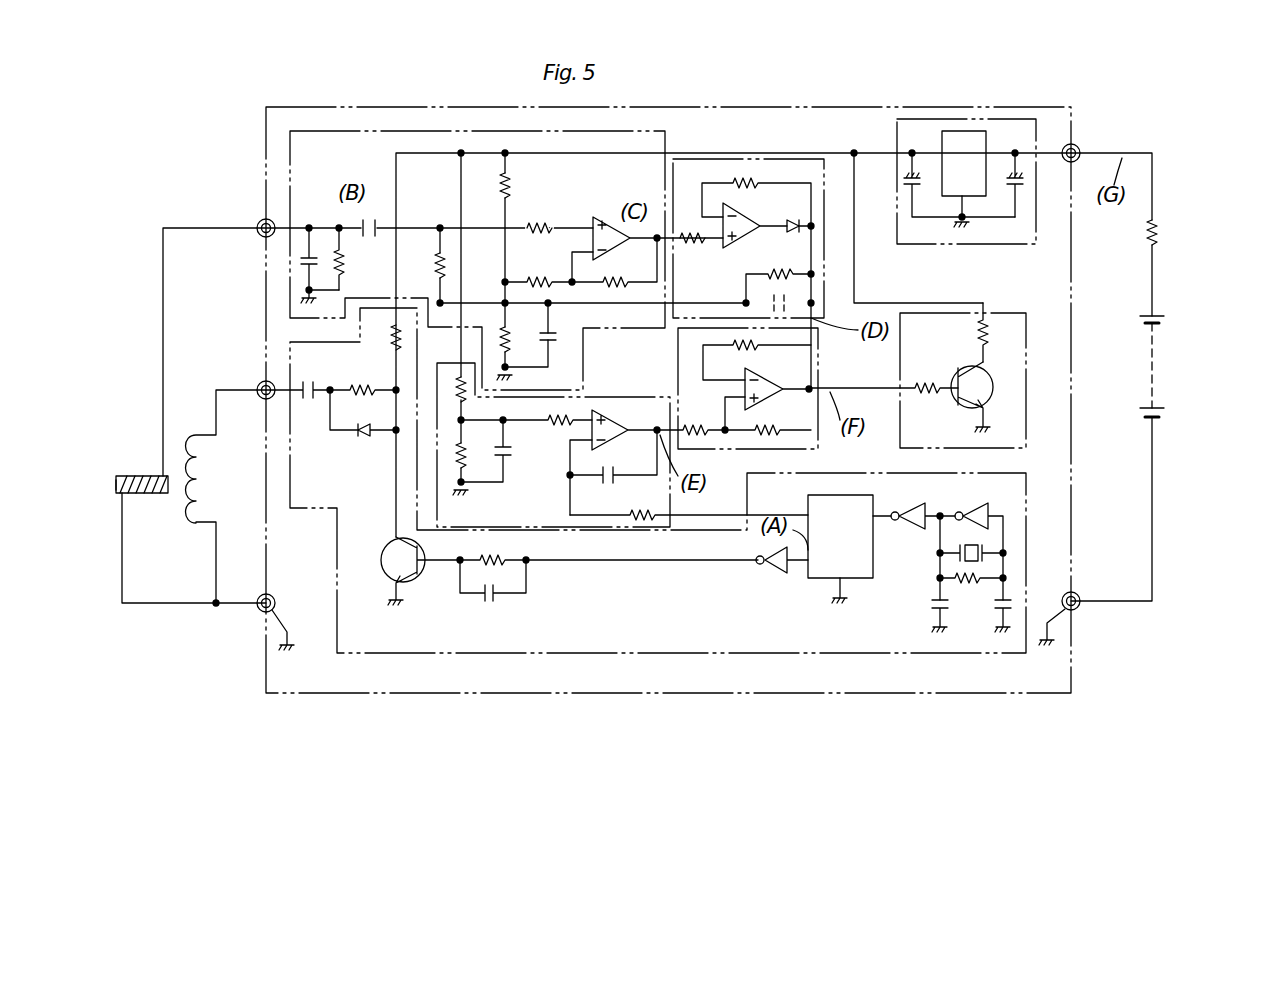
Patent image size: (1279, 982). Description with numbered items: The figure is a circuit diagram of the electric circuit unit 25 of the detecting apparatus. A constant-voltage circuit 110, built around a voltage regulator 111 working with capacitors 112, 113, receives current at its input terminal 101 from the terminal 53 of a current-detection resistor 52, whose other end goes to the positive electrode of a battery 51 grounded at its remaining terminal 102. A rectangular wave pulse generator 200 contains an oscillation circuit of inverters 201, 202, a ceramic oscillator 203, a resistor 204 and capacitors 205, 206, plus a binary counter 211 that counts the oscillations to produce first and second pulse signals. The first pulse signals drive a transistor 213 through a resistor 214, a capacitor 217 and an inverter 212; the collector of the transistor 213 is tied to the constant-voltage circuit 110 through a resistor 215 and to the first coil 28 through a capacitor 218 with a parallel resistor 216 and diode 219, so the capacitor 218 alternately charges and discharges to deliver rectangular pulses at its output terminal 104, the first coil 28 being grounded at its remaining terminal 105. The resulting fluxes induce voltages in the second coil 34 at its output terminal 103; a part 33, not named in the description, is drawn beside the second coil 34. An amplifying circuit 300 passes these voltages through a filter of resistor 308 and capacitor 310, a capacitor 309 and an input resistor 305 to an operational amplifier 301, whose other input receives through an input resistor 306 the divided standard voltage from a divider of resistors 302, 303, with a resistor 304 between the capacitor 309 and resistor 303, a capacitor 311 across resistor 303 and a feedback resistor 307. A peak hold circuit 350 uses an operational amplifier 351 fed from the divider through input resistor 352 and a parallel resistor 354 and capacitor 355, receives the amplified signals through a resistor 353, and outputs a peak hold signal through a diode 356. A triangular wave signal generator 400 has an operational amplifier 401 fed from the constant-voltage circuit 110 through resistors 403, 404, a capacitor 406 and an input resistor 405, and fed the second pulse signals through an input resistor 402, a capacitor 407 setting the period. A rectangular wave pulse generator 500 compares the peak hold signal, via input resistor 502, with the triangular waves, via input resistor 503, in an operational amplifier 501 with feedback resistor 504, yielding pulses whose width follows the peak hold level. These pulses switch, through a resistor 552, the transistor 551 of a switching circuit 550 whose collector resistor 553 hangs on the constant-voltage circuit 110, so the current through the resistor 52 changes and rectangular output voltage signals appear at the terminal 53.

The electric circuit unit 25 is at (320, 99).
The first coil 28 is at (195, 522).
The magnetic core 33 is at (116, 486).
The second coil 34 is at (148, 476).
The battery 51 is at (1146, 362).
The current-detection resistor 52 is at (1145, 236).
The terminal 53 is at (1152, 180).
The input terminal 101 is at (1078, 147).
The remaining terminal 102 is at (1074, 610).
The output terminal 103 is at (260, 220).
The output terminal 104 is at (260, 382).
The remaining terminal 105 is at (259, 612).
The constant-voltage circuit 110 is at (1010, 248).
The voltage regulator 111 is at (978, 138).
The capacitor 112 is at (1006, 188).
The capacitor 113 is at (922, 188).
The rectangular wave pulse generator 200 is at (1008, 472).
The inverter 201 is at (976, 509).
The inverter 202 is at (912, 509).
The ceramic oscillator 203 is at (965, 540).
The resistor 204 is at (966, 590).
The capacitor 205 is at (928, 604).
The capacitor 206 is at (1012, 600).
The binary counter 211 is at (808, 578).
The inverter 212 is at (770, 566).
The transistor 213 is at (410, 584).
The resistor 214 is at (505, 556).
The resistor 215 is at (390, 330).
The resistor 216 is at (352, 386).
The capacitor 217 is at (488, 600).
The capacitor 218 is at (306, 398).
The diode 219 is at (362, 440).
The amplifying circuit 300 is at (541, 124).
The operational amplifier 301 is at (606, 216).
The resistor 302 is at (512, 188).
The resistor 303 is at (498, 335).
The resistor 304 is at (448, 260).
The input resistor 305 is at (538, 222).
The input resistor 306 is at (537, 278).
The resistor 307 is at (613, 278).
The resistor 308 is at (347, 262).
The capacitor 309 is at (372, 217).
The capacitor 310 is at (322, 258).
The capacitor 311 is at (556, 338).
The peak hold circuit 350 is at (724, 154).
The operational amplifier 351 is at (738, 248).
The input resistor 352 is at (752, 182).
The resistor 353 is at (692, 250).
The resistor 354 is at (785, 270).
The capacitor 355 is at (786, 300).
The diode 356 is at (796, 218).
The triangular wave signal generator 400 is at (594, 372).
The operational amplifier 401 is at (610, 428).
The input resistor 402 is at (643, 512).
The resistor 403 is at (456, 380).
The resistor 404 is at (468, 456).
The input resistor 405 is at (553, 426).
The capacitor 406 is at (510, 462).
The capacitor 407 is at (610, 474).
The rectangular wave pulse generator 500 is at (830, 370).
The operational amplifier 501 is at (760, 380).
The input resistor 502 is at (740, 340).
The input resistor 503 is at (692, 424).
The resistor 504 is at (767, 424).
The switching circuit 550 is at (1012, 304).
The transistor 551 is at (993, 392).
The resistor 552 is at (926, 400).
The resistor 553 is at (975, 335).